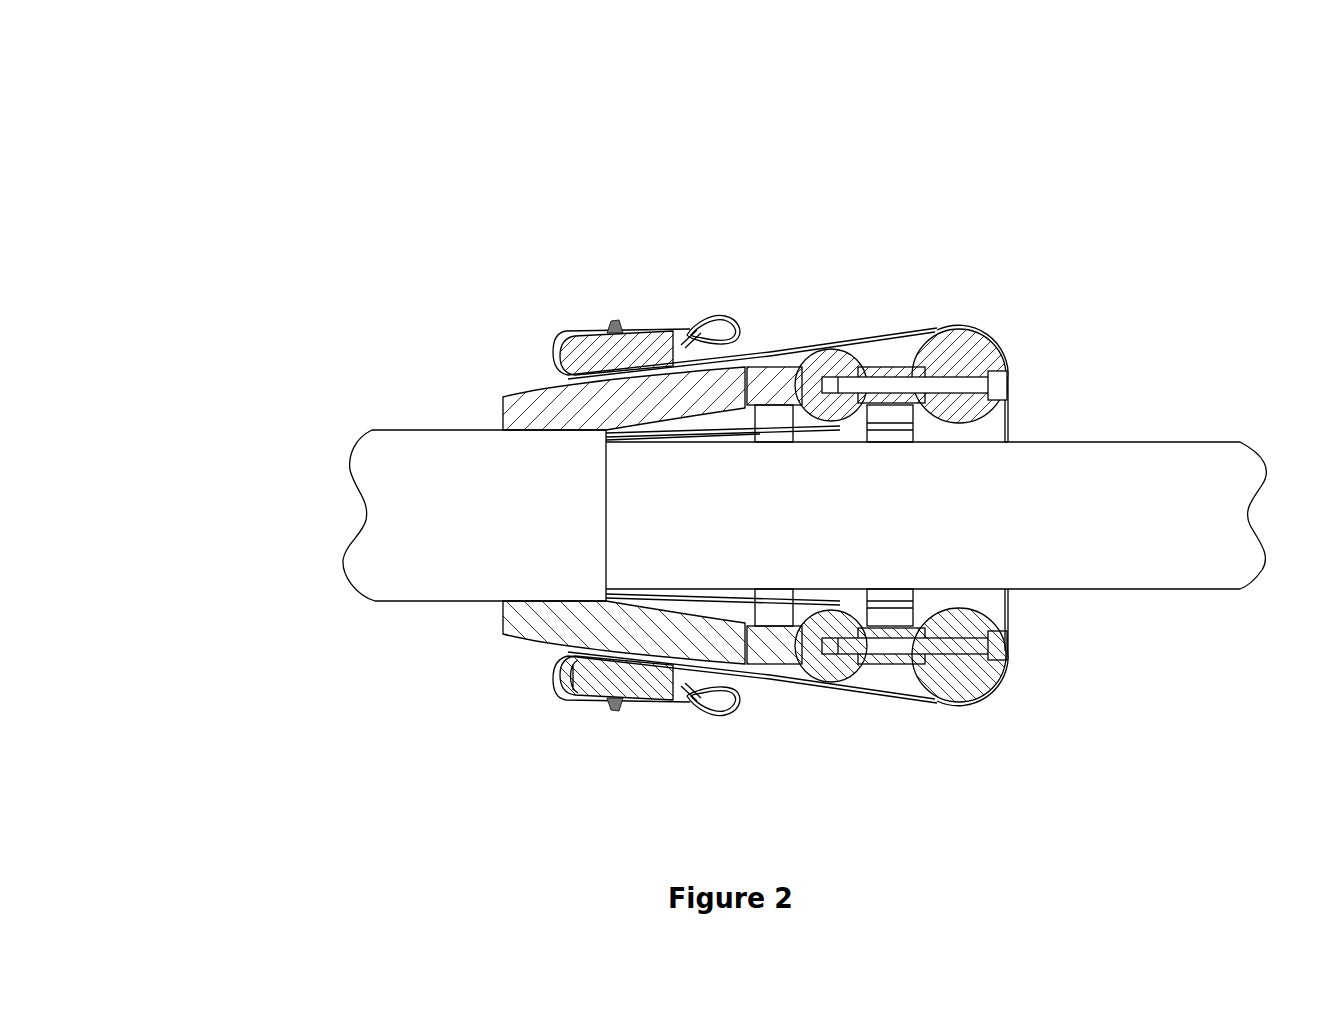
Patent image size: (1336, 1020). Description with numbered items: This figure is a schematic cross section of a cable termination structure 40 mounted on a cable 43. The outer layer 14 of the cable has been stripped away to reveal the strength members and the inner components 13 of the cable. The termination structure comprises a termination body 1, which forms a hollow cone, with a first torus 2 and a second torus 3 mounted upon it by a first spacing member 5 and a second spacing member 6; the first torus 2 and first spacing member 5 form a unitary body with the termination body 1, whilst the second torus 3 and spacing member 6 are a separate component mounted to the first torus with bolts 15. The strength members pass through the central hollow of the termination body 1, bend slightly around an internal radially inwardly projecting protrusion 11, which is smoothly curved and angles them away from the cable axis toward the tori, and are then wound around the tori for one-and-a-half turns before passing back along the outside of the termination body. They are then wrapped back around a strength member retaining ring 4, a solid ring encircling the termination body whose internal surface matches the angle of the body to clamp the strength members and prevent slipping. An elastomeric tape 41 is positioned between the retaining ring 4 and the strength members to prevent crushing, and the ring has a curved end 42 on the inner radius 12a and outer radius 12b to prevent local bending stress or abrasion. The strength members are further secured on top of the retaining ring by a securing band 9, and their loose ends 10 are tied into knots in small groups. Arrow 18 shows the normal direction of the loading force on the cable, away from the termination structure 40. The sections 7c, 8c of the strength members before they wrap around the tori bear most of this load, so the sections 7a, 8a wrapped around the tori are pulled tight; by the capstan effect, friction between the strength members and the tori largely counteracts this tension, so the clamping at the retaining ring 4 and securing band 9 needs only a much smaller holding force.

The termination body 1 is at (530, 397).
The first torus 2 is at (853, 685).
The second torus 3 is at (968, 680).
The strength member retaining ring 4 is at (565, 700).
The first spacing member 5 is at (773, 657).
The second spacing member 6 is at (848, 350).
The section of strength member wrapped around torus 7a is at (772, 367).
The section of strength member before torus 7c is at (893, 430).
The section of strength member wrapped around torus 8a is at (902, 330).
The section of strength member before torus 8c is at (860, 484).
The securing band 9 is at (617, 322).
The loose ends of strength members 10 is at (712, 318).
The radially inwardly projecting protrusion 11 is at (637, 441).
The inner radius of retaining ring 12a is at (577, 680).
The outer radius of retaining ring 12b is at (592, 680).
The inner components of the cable 13 is at (1145, 498).
The outer layer of the cable 14 is at (452, 555).
The bolts 15 is at (1006, 378).
The arrow indicating loading force direction 18 is at (312, 522).
The cable termination structure 40 is at (553, 158).
The elastomeric tape 41 is at (690, 330).
The curved end of retaining ring 42 is at (590, 340).
The cable 43 is at (293, 380).